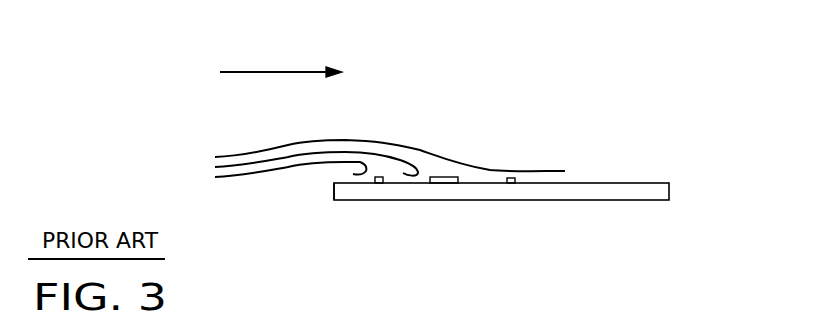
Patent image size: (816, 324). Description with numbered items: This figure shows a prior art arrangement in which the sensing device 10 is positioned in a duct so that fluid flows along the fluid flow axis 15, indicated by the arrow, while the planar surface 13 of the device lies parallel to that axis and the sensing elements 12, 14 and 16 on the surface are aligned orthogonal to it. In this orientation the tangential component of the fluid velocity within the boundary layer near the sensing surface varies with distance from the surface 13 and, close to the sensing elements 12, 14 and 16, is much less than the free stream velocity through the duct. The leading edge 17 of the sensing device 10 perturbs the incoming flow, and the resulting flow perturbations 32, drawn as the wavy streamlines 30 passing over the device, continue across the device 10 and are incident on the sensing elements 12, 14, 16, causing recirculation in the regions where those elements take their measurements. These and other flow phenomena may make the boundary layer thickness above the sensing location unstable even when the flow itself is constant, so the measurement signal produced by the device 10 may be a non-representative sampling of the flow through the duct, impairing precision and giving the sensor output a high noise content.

The sensing device 10 is at (489, 190).
The sensing element 12 is at (447, 177).
The planar surface 13 is at (638, 183).
The sensing element 14 is at (381, 177).
The fluid flow axis 15 is at (275, 71).
The sensing element 16 is at (513, 179).
The leading edge 17 is at (334, 192).
The lead wires 30 is at (390, 129).
The flow perturbations 32 is at (366, 168).